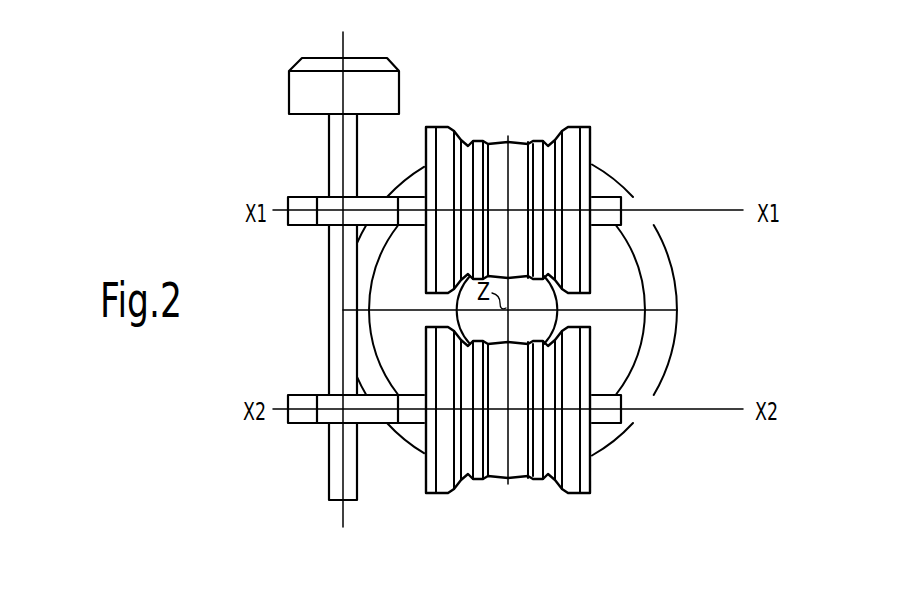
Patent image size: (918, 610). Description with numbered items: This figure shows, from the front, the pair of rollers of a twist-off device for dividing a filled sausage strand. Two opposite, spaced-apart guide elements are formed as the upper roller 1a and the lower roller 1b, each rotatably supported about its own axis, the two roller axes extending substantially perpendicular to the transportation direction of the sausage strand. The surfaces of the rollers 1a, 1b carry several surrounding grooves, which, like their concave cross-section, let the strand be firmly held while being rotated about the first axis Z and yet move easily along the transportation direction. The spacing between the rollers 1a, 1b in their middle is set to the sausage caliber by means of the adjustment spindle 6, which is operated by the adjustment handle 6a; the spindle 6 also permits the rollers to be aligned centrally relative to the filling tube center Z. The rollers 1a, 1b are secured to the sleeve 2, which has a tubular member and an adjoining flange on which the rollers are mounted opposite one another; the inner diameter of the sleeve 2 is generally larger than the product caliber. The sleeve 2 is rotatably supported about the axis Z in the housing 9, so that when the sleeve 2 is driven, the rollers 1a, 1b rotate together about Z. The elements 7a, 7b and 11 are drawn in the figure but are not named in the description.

The sleeve 2 is at (631, 370).
The adjustment spindle 6 is at (329, 492).
The adjustment handle 6a is at (399, 97).
The upper support bar 7a is at (612, 197).
The lower support bar 7b is at (608, 420).
The housing 9 is at (667, 255).
The central opening 11 is at (528, 315).
The upper roller 1a is at (573, 142).
The lower roller 1b is at (567, 492).